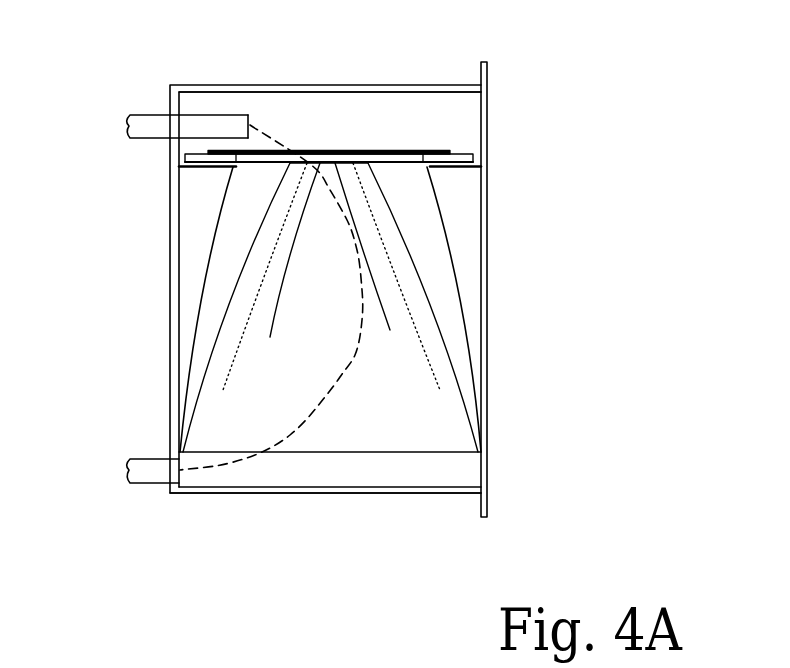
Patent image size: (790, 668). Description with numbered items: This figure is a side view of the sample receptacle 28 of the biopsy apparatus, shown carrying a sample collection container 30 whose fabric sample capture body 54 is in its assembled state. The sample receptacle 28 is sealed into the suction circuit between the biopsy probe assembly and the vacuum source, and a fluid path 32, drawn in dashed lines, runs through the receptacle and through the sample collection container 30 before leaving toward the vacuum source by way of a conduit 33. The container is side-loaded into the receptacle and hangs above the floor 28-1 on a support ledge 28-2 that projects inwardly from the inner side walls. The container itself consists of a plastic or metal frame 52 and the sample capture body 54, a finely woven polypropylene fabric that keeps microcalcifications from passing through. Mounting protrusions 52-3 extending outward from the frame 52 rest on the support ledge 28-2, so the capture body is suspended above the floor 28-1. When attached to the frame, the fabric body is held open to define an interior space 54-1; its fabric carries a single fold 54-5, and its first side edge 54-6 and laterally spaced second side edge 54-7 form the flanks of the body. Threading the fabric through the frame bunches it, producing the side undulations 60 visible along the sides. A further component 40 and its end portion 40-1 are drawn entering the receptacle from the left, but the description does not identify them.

The sample receptacle 28 is at (171, 275).
The floor 28-1 is at (297, 487).
The support ledge 28-2 is at (202, 172).
The sample collection container 30 is at (431, 108).
The fluid path 32 is at (272, 140).
The conduit 33 is at (147, 485).
The inlet duct 40 is at (198, 113).
The inlet duct outlet end 40-1 is at (250, 122).
The frame 52 is at (380, 158).
The mounting protrusions 52-3 is at (185, 158).
The sample capture body 54 is at (465, 282).
The interior space 54-1 is at (376, 132).
The fold 54-5 is at (388, 452).
The first side edge 54-6 is at (208, 250).
The second side edge 54-7 is at (452, 250).
The side undulations 60 is at (238, 319).